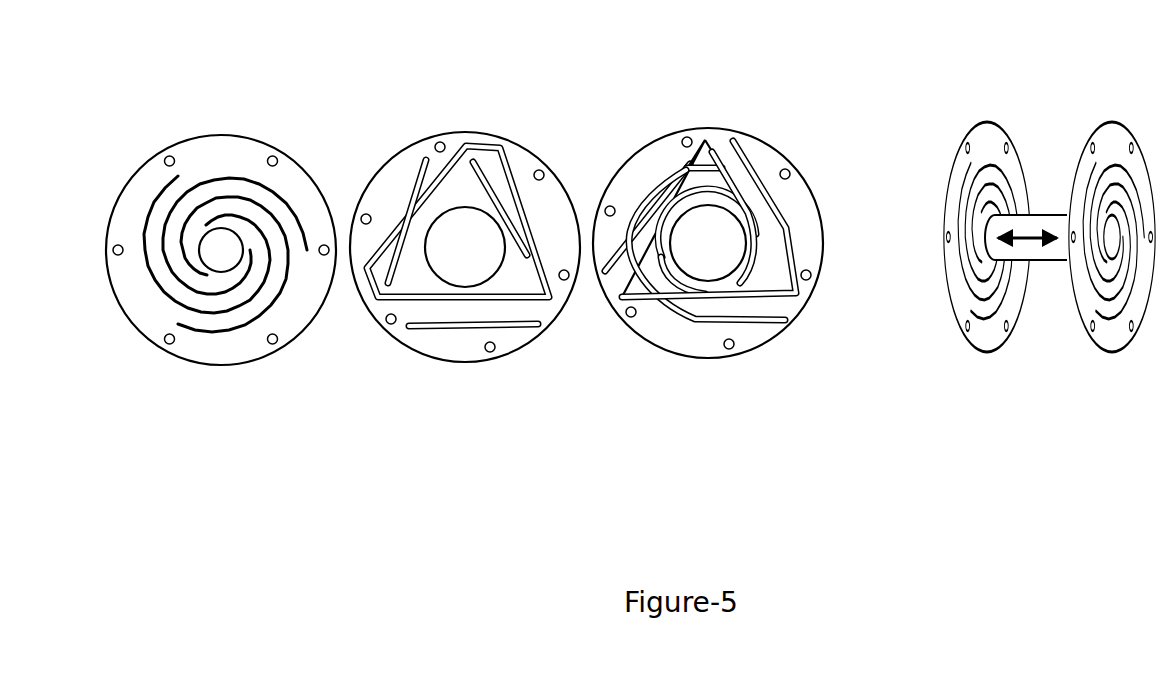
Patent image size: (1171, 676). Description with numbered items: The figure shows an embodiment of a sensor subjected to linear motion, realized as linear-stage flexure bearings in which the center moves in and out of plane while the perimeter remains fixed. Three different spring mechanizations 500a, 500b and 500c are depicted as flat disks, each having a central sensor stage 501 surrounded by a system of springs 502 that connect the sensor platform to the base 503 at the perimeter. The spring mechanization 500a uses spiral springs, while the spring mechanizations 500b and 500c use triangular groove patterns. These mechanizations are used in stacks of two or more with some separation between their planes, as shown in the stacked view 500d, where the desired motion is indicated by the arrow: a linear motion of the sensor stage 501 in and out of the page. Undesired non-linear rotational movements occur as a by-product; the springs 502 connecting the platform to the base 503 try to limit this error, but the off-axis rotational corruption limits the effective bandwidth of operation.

The spring mechanization 500a is at (140, 27).
The spring mechanization 500b is at (392, 5).
The spring mechanization 500c is at (662, 27).
The stack of spring mechanizations 500d is at (968, 22).
The sensor stage 501 is at (222, 250).
The springs 502 is at (276, 180).
The base 503 is at (260, 360).